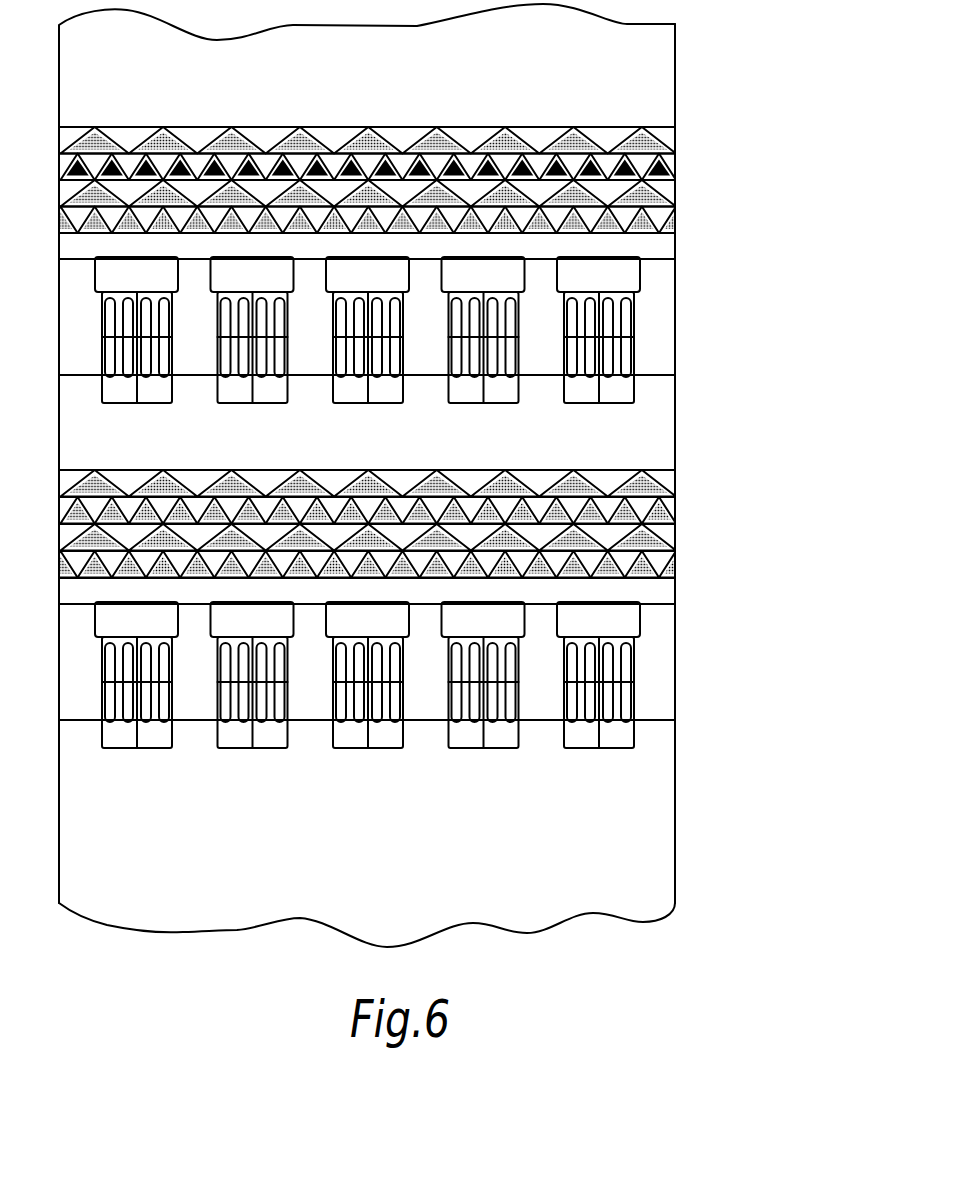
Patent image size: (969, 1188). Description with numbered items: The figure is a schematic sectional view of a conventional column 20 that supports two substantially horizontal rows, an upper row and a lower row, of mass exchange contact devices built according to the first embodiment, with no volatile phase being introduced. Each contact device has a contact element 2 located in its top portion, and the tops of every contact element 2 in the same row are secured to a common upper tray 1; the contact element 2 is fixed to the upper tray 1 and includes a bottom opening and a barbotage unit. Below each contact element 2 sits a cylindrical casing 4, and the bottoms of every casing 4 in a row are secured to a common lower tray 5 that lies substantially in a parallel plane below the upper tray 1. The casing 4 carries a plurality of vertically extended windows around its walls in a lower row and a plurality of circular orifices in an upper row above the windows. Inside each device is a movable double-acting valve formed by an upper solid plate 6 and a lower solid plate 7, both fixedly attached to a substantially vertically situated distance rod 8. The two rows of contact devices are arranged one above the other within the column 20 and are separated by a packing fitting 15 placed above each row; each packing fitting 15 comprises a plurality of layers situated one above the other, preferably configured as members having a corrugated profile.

The upper tray 1 is at (454, 475).
The contact element 2 is at (446, 609).
The cylindrical casing 4 is at (472, 241).
The lower tray 5 is at (454, 317).
The upper solid plate 6 is at (477, 320).
The lower solid plate 7 is at (476, 379).
The distance rod 8 is at (493, 357).
The packing fitting 15 is at (446, 143).
The column 20 is at (762, 463).